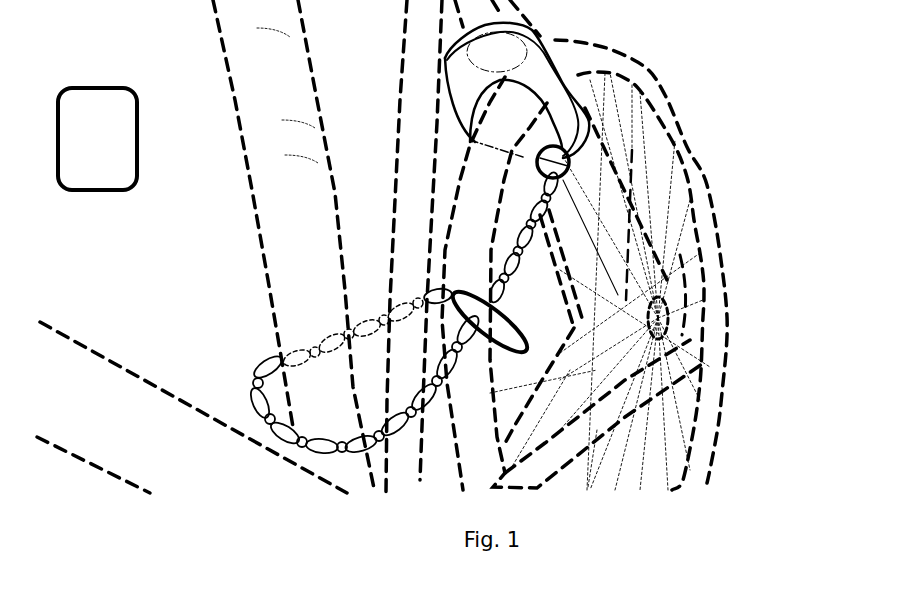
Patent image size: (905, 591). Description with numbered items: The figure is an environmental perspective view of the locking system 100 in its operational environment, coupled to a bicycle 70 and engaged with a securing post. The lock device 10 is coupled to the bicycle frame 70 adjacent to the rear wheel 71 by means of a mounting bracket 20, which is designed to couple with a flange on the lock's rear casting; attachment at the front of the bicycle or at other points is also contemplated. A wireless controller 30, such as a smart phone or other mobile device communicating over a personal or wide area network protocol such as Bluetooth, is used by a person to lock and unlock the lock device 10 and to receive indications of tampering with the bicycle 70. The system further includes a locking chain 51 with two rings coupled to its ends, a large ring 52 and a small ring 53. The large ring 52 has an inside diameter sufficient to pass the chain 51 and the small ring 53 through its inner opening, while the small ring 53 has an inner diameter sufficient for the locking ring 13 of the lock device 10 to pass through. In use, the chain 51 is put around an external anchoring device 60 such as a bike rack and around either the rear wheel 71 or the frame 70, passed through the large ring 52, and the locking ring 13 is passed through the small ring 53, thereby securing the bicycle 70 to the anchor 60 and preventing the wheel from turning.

The locking system 100 is at (710, 64).
The lock device 10 is at (517, 90).
The locking ring 13 is at (541, 158).
The mounting bracket 20 is at (505, 50).
The wireless controller 30 is at (102, 142).
The locking chain 51 is at (303, 343).
The large ring 52 is at (500, 297).
The small ring 53 is at (562, 170).
The external anchoring device 60 is at (282, 100).
The bicycle 70 is at (401, 72).
The rear wheel 71 is at (707, 165).